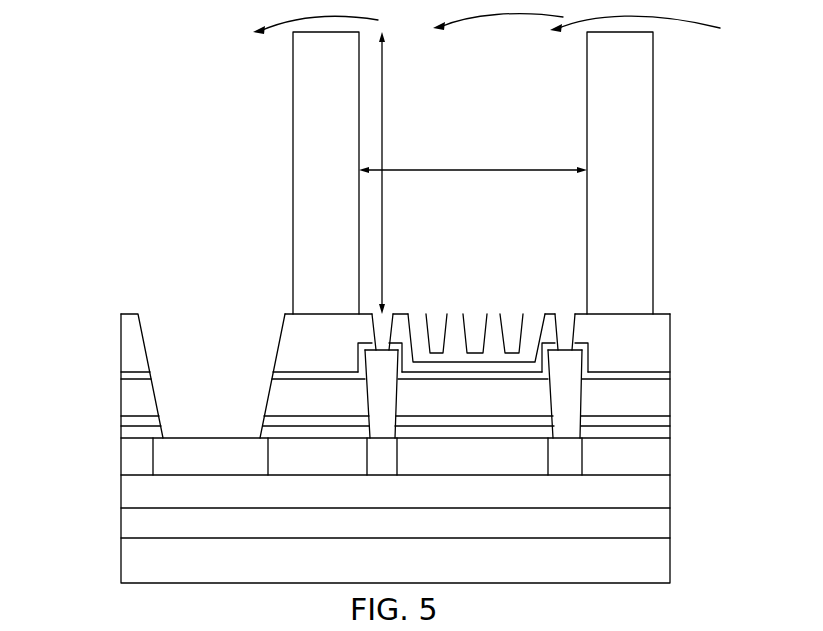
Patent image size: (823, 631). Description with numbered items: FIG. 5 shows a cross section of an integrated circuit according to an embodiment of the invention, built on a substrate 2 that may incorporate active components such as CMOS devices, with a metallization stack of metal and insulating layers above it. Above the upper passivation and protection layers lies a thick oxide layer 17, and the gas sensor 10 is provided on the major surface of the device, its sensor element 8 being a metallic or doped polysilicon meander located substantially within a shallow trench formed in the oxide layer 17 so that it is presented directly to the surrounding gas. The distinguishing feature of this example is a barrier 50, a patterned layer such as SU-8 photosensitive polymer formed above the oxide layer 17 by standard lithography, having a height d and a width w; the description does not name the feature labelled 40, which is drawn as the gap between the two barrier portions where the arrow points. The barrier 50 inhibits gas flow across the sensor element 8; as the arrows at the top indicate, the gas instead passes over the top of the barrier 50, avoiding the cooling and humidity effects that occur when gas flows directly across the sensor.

The substrate 2 is at (648, 560).
The sensor element 8 is at (474, 314).
The gas sensor 10 is at (515, 291).
The oxide layer 17 is at (131, 358).
The opening between mask pillars 40 is at (528, 113).
The barrier 50 is at (628, 198).